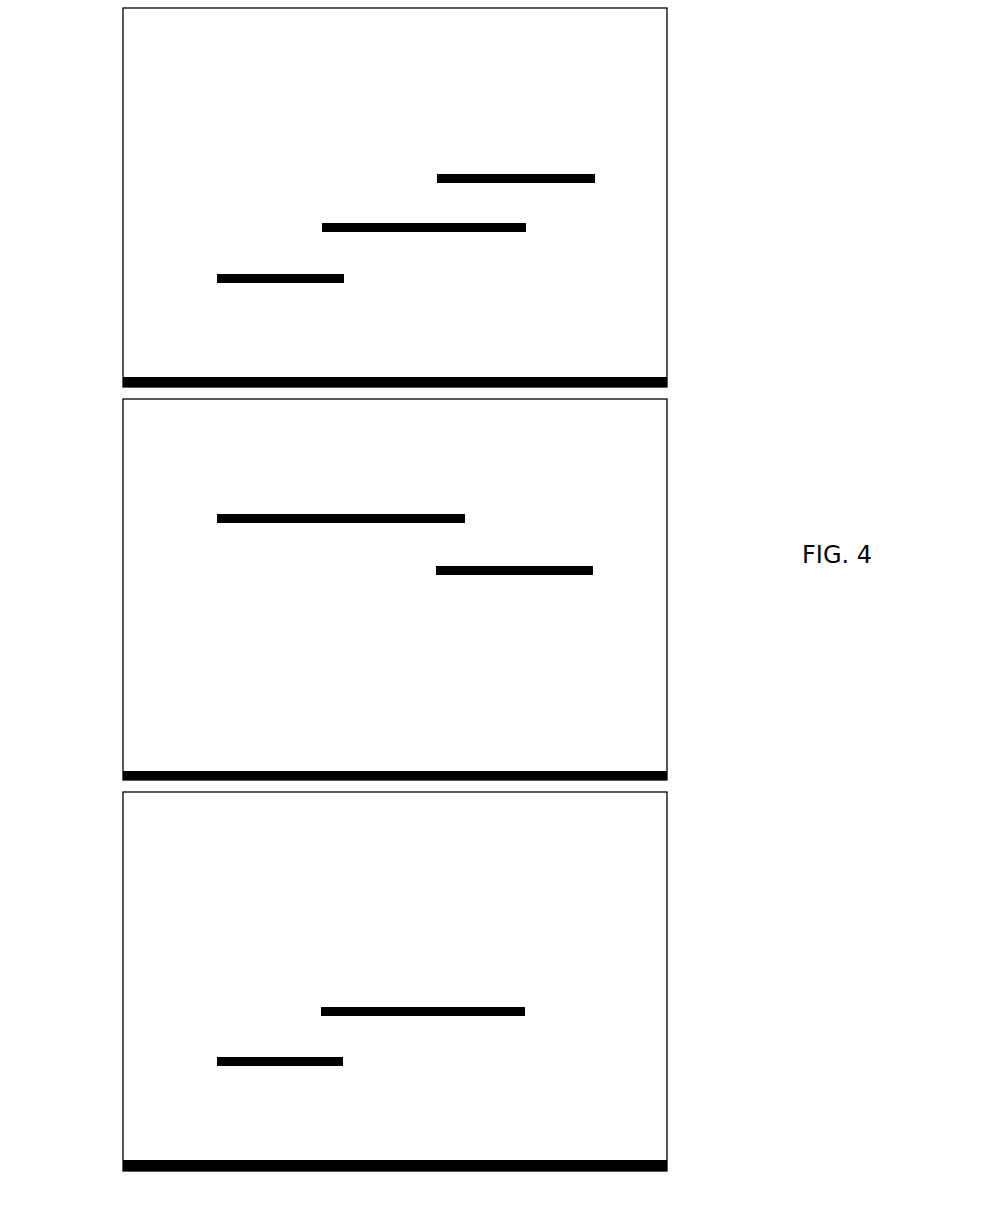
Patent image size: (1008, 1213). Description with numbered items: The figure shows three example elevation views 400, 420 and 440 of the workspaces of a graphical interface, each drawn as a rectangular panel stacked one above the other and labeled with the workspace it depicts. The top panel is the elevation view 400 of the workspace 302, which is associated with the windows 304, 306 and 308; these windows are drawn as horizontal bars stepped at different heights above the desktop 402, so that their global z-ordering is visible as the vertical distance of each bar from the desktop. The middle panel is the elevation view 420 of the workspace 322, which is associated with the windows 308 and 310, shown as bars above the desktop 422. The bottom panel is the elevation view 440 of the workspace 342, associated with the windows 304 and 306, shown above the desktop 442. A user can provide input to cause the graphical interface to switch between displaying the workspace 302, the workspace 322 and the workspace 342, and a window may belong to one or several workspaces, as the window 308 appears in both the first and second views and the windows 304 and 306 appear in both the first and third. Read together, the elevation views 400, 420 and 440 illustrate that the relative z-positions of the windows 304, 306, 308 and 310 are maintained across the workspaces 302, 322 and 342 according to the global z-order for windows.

The elevation view 400 is at (123, 65).
The elevation view 420 is at (123, 454).
The elevation view 440 is at (123, 878).
The workspace 302 is at (177, 33).
The workspace 322 is at (177, 424).
The workspace 342 is at (177, 815).
The desktop 402 is at (600, 378).
The substrate of second stage 422 is at (615, 771).
The substrate of third stage 442 is at (615, 1160).
The window 304 is at (290, 274).
The window 306 is at (430, 223).
The window 308 is at (530, 174).
The window 310 is at (390, 514).